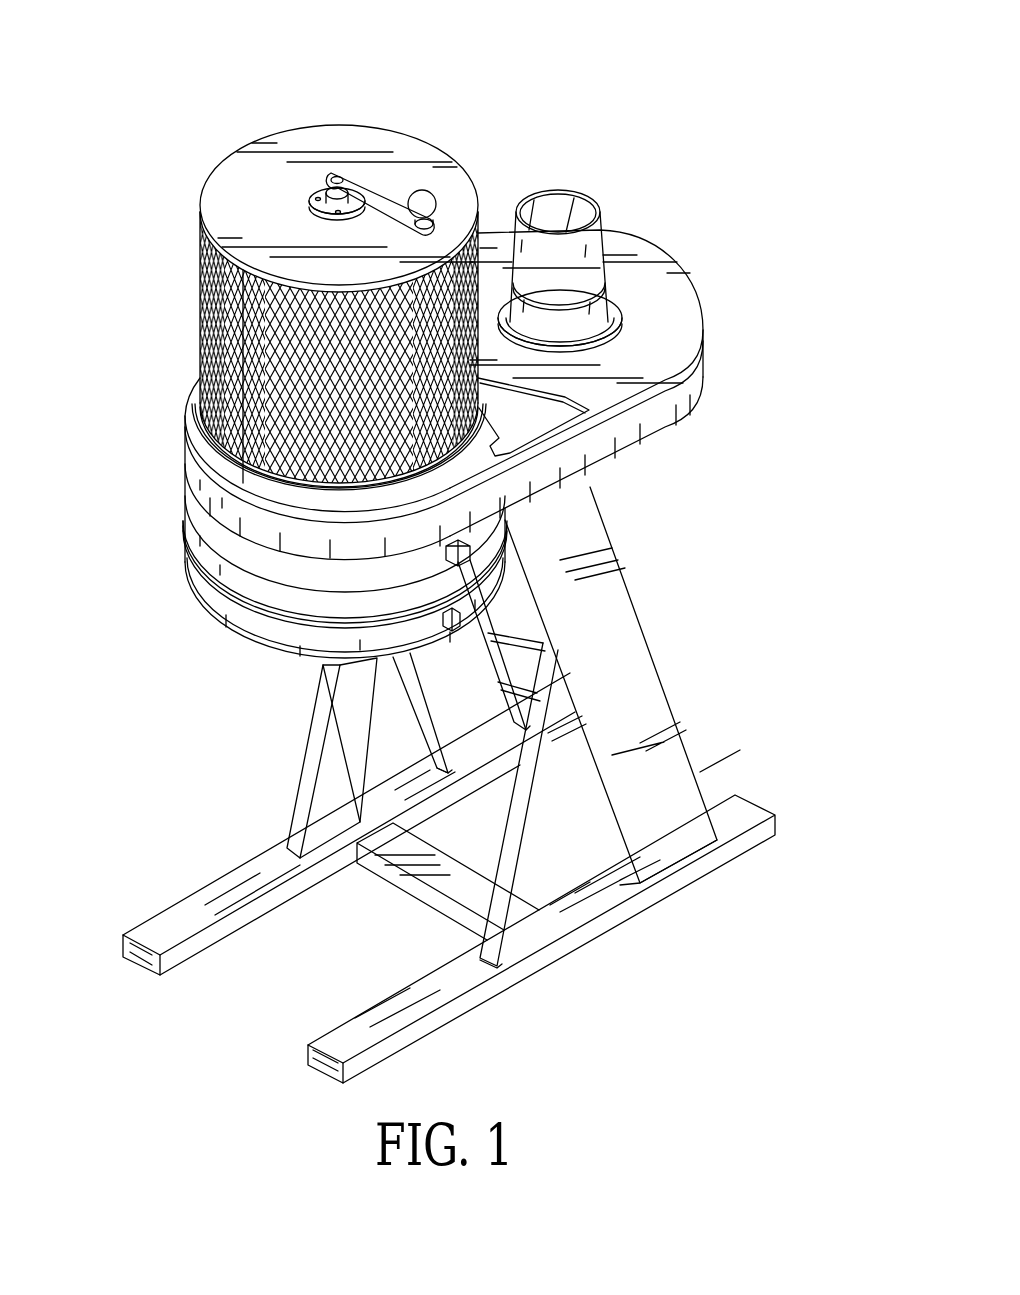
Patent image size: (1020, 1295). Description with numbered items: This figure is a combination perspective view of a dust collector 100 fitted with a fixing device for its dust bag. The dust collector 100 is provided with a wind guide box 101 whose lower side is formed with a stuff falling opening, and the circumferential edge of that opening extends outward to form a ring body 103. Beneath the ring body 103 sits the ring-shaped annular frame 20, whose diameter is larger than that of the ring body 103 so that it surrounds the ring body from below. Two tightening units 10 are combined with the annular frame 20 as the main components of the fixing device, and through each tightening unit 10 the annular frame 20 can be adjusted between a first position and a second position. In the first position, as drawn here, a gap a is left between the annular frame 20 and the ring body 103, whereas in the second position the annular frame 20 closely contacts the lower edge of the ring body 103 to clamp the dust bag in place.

The dust collector 100 is at (655, 168).
The wind guide box 101 is at (705, 351).
The ring body 103 is at (290, 599).
The gap a is at (311, 622).
The annular frame 20 is at (186, 573).
The tightening unit 10 is at (492, 553).